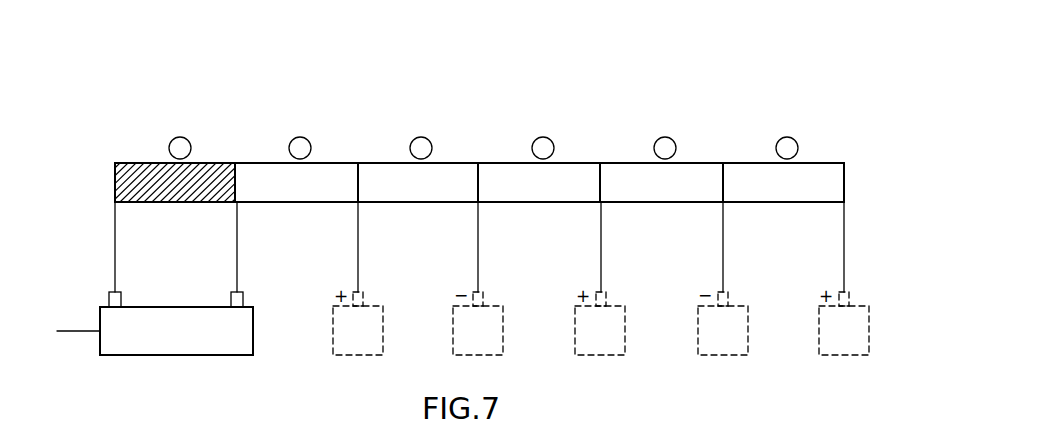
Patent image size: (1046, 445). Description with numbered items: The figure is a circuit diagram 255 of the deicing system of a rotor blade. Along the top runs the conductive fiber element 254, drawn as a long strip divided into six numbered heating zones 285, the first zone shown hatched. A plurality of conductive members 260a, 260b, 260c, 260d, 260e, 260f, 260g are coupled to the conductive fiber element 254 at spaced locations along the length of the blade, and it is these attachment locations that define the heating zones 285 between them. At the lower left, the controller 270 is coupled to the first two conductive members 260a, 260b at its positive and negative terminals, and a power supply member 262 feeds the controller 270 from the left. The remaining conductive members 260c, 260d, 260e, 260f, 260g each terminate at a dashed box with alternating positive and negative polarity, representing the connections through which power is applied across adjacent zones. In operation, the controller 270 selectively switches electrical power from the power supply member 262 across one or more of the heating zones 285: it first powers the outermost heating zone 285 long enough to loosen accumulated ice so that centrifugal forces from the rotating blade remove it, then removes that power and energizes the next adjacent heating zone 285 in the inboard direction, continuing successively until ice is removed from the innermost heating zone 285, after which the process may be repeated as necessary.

The conductive fiber element 254 is at (845, 181).
The circuit diagram 255 is at (475, 112).
The heating zones 285 is at (416, 122).
The conductive member 260a is at (115, 233).
The conductive member 260b is at (237, 233).
The conductive member 260c is at (358, 233).
The conductive member 260d is at (478, 233).
The conductive member 260e is at (601, 233).
The conductive member 260f is at (723, 233).
The conductive member 260g is at (844, 268).
The power supply member 262 is at (82, 328).
The controller 270 is at (173, 355).